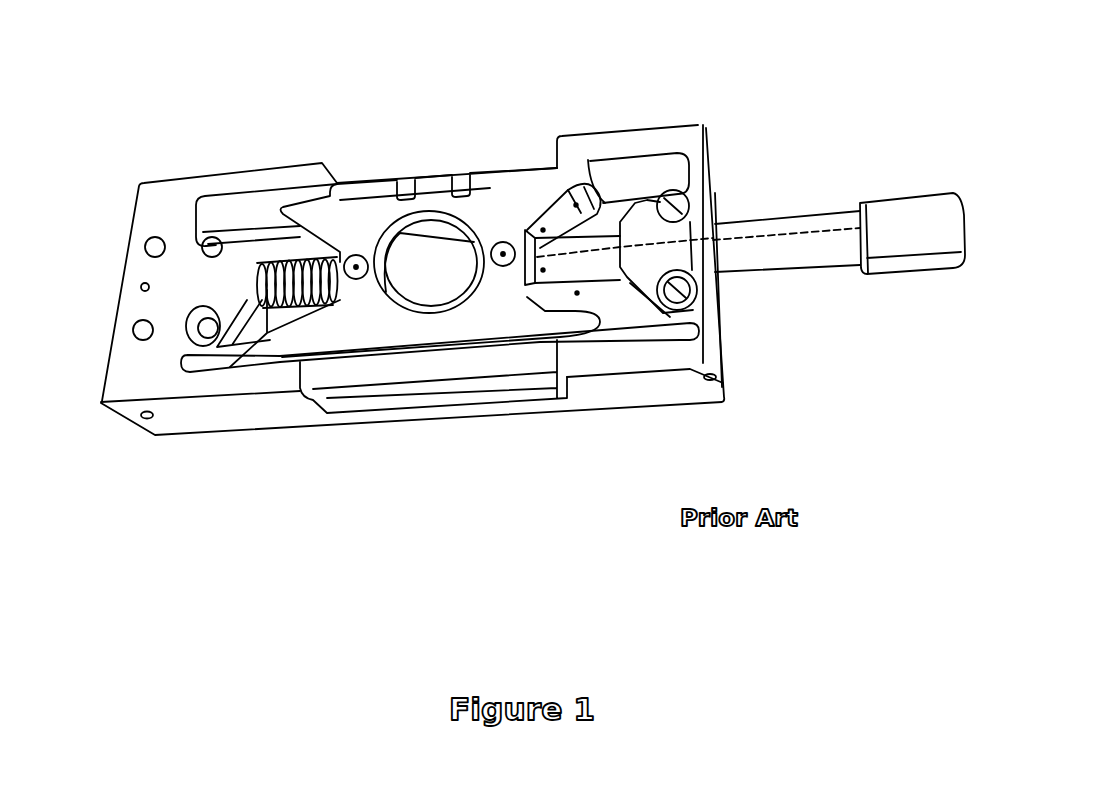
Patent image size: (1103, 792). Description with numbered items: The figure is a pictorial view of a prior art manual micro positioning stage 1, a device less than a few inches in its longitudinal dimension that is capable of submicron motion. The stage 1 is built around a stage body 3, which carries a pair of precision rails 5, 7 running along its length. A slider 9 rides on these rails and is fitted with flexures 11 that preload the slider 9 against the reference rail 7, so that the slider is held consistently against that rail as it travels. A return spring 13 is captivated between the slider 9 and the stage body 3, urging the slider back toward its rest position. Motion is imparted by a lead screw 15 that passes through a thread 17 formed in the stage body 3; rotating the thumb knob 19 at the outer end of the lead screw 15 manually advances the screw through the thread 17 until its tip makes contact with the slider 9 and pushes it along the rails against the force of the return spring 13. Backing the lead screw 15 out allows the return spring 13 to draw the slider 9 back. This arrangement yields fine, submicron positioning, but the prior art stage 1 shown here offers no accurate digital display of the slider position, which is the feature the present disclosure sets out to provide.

The manual micro positioning stage 1 is at (476, 519).
The stage body 3 is at (180, 213).
The precision rail 5 is at (251, 208).
The reference rail 7 is at (458, 360).
The slider 9 is at (533, 197).
The flexures 11 is at (478, 187).
The return spring 13 is at (262, 305).
The lead screw 15 is at (757, 227).
The thread 17 is at (717, 247).
The thumb knob 19 is at (893, 210).